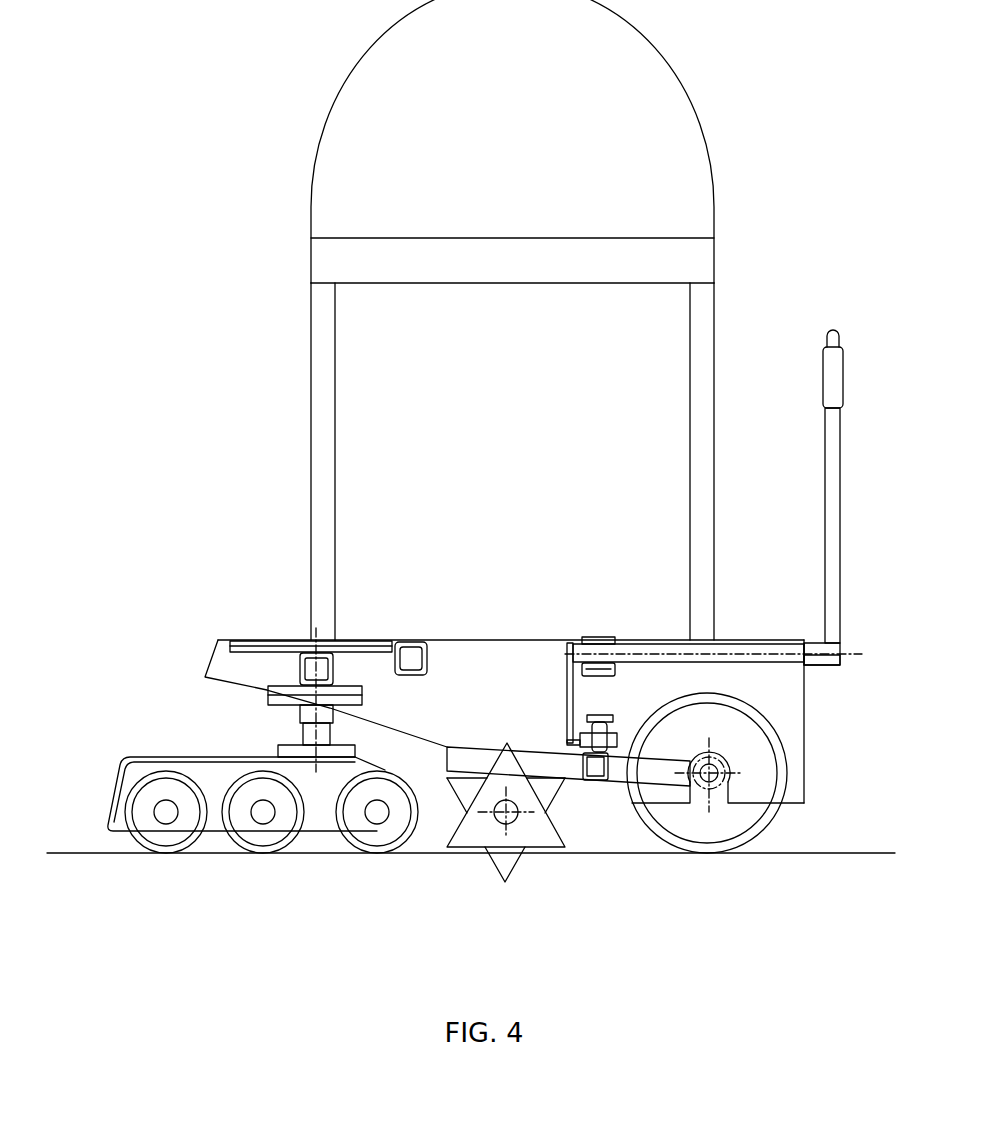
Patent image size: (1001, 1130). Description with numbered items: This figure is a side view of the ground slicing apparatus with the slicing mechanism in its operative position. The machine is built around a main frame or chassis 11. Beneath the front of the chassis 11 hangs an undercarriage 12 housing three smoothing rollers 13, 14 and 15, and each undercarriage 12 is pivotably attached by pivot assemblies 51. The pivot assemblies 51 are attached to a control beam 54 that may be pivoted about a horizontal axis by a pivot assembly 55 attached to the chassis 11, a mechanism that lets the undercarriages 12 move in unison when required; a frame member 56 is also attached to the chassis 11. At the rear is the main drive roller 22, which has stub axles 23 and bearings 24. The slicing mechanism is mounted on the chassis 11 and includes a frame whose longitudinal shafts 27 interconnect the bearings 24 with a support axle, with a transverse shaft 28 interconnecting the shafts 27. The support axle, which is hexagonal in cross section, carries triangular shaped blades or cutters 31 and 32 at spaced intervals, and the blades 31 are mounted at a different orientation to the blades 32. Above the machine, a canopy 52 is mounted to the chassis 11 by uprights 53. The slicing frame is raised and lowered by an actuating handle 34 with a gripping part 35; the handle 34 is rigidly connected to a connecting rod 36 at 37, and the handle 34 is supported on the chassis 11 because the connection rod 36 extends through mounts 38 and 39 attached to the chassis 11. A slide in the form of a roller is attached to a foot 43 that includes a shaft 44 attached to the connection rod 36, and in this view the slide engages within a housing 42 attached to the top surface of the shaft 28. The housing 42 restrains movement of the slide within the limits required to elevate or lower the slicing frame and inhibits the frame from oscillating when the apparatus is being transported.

The main frame or chassis 11 is at (478, 668).
The undercarriage 12 is at (148, 757).
The smoothing roller 13 is at (190, 835).
The smoothing roller 14 is at (280, 835).
The smoothing roller 15 is at (390, 835).
The main drive roller 22 is at (747, 817).
The stub axle 23 is at (725, 775).
The bearing 24 is at (708, 797).
The longitudinal shaft 27 is at (478, 757).
The transverse shaft 28 is at (600, 773).
The triangular shaped blade or cutter 31 is at (533, 828).
The triangular shaped blade or cutter 32 is at (505, 862).
The actuating handle 34 is at (830, 497).
The gripping part 35 is at (830, 380).
The connecting rod 36 is at (670, 645).
The connection point 37 is at (823, 665).
The mount 38 is at (817, 642).
The mount 39 is at (604, 637).
The housing 42 is at (602, 717).
The foot 43 is at (577, 733).
The shaft 44 is at (566, 665).
The pivot assembly 51 is at (265, 732).
The canopy 52 is at (655, 128).
The upright 53 is at (325, 473).
The control beam 54 is at (297, 668).
The pivot assembly 55 is at (295, 643).
The frame member 56 is at (412, 643).